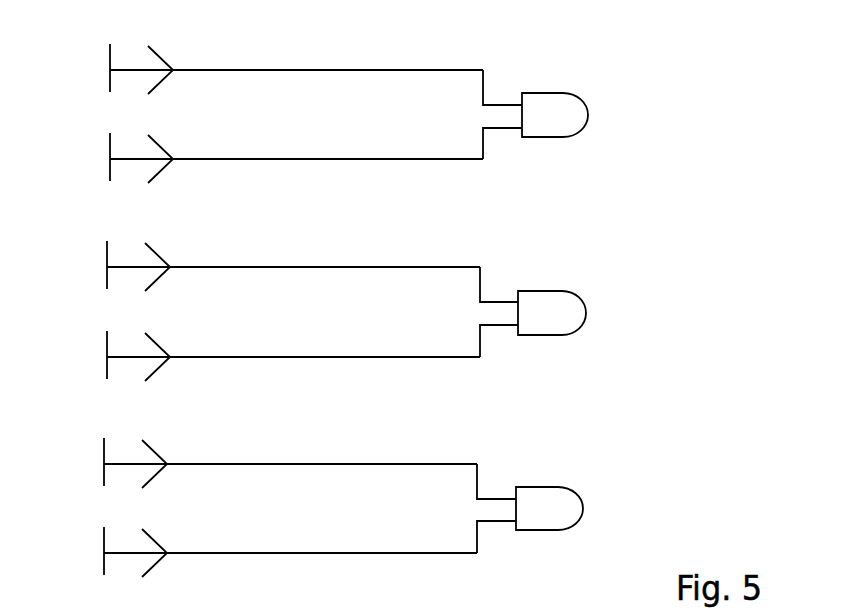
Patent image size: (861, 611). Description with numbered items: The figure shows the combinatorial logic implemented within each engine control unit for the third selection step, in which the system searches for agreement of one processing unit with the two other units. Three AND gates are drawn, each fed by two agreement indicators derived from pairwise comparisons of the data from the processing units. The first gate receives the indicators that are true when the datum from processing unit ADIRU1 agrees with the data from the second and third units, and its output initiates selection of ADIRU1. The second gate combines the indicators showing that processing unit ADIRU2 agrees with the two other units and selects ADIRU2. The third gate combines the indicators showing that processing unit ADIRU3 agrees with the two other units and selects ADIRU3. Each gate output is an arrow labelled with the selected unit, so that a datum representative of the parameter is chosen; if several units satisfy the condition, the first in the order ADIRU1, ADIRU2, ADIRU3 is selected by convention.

The processing unit ADIRU1 is at (588, 116).
The processing unit ADIRU2 is at (586, 313).
The processing unit ADIRU3 is at (583, 510).